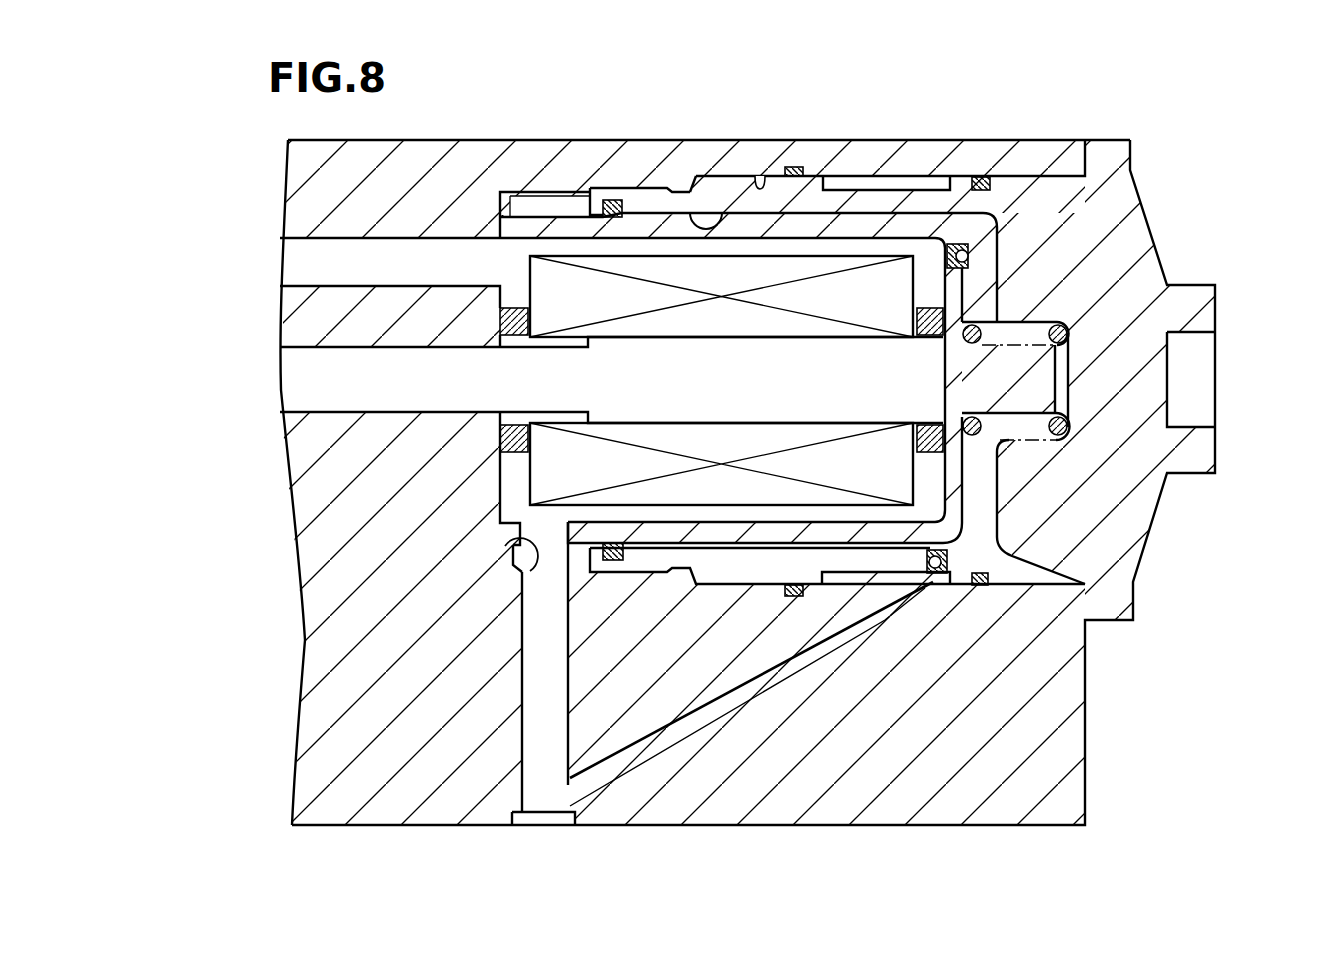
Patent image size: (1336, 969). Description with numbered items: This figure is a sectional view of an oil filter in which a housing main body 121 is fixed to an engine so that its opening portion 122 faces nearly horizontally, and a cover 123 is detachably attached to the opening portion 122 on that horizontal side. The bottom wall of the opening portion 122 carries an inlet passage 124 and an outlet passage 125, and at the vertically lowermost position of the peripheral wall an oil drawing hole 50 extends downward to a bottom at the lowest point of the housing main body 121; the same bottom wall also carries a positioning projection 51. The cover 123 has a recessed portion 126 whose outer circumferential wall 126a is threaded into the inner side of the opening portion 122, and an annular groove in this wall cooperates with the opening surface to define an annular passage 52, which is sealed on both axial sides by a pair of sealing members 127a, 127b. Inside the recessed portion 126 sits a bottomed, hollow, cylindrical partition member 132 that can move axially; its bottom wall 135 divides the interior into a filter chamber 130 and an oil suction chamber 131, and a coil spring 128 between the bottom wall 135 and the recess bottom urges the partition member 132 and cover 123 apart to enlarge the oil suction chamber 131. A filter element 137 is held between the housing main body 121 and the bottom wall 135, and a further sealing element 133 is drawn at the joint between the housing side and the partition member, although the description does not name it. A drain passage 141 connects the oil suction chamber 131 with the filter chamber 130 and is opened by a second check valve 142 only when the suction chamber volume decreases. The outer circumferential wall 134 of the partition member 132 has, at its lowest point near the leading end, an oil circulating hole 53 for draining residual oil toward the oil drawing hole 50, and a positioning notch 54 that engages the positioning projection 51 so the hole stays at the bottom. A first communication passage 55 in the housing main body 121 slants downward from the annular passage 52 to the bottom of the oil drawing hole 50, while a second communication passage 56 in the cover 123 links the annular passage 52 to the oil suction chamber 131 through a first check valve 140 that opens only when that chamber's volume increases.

The housing main body 121 is at (895, 136).
The opening portion 122 is at (760, 174).
The cover 123 is at (1140, 262).
The inlet passage 124 is at (300, 258).
The outlet passage 125 is at (300, 372).
The recessed portion 126 is at (690, 212).
The outer circumferential wall 126a is at (722, 192).
The sealing member 127a is at (797, 166).
The sealing member 127b is at (984, 177).
The coil spring 128 is at (1068, 333).
The filter chamber 130 is at (580, 240).
The oil suction chamber 131 is at (980, 487).
The partition member 132 is at (762, 562).
The seal 133 is at (610, 200).
The outer circumferential wall 134 is at (678, 537).
The bottom wall 135 is at (955, 508).
The filter element 137 is at (550, 468).
The first check valve 140 is at (932, 575).
The drain passage 141 is at (956, 242).
The second check valve 142 is at (968, 258).
The oil drawing hole 50 is at (530, 720).
The positioning projection 51 is at (505, 566).
The annular passage 52 is at (847, 576).
The oil circulating hole 53 is at (515, 582).
The positioning notch 54 is at (508, 556).
The first communication passage 55 is at (732, 708).
The second communication passage 56 is at (980, 588).